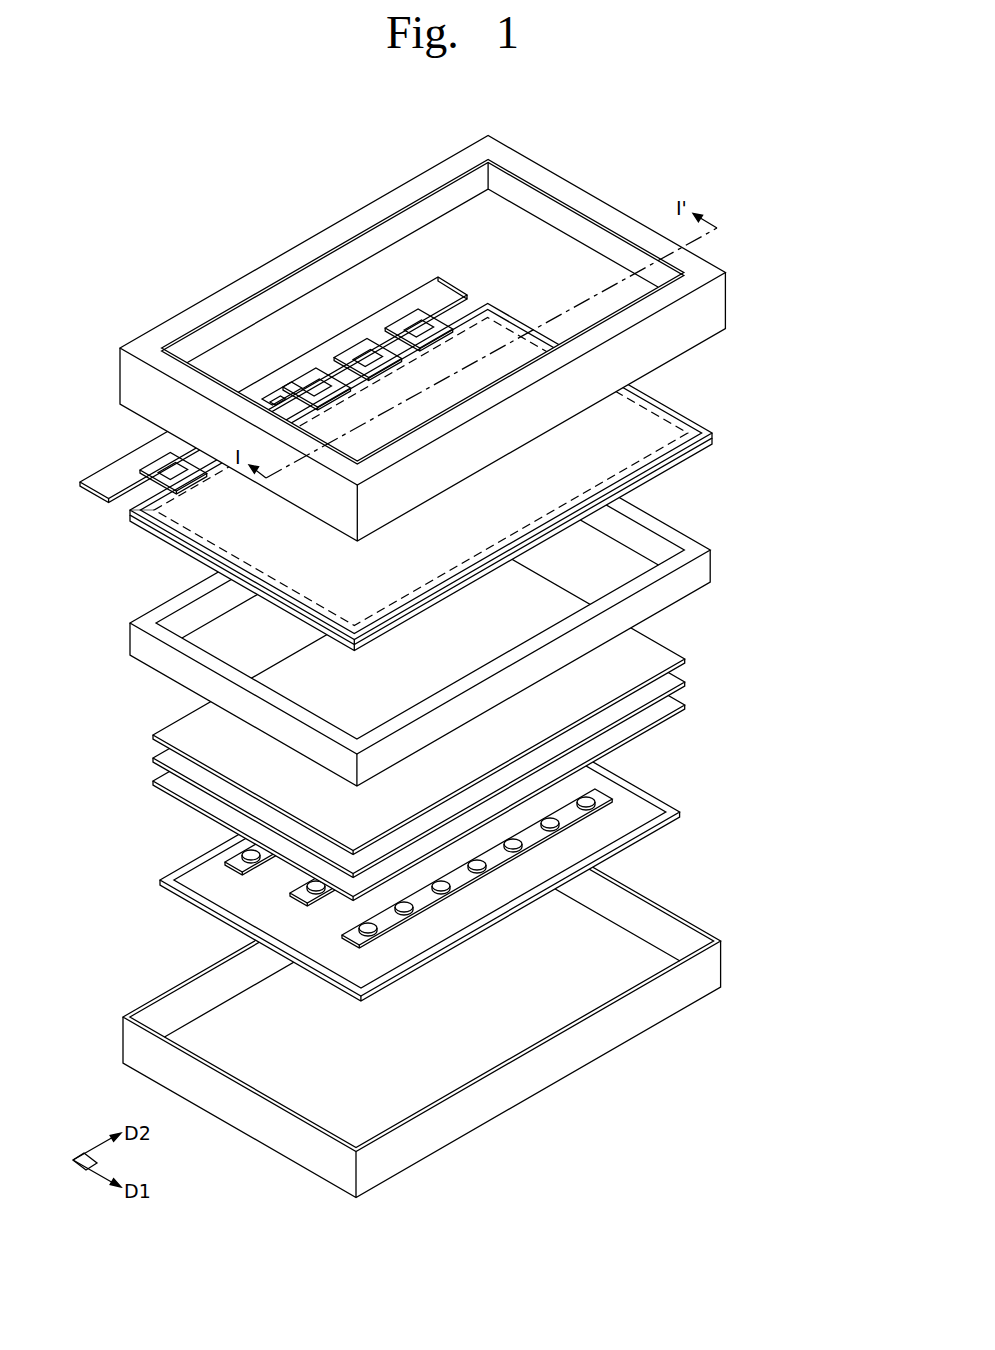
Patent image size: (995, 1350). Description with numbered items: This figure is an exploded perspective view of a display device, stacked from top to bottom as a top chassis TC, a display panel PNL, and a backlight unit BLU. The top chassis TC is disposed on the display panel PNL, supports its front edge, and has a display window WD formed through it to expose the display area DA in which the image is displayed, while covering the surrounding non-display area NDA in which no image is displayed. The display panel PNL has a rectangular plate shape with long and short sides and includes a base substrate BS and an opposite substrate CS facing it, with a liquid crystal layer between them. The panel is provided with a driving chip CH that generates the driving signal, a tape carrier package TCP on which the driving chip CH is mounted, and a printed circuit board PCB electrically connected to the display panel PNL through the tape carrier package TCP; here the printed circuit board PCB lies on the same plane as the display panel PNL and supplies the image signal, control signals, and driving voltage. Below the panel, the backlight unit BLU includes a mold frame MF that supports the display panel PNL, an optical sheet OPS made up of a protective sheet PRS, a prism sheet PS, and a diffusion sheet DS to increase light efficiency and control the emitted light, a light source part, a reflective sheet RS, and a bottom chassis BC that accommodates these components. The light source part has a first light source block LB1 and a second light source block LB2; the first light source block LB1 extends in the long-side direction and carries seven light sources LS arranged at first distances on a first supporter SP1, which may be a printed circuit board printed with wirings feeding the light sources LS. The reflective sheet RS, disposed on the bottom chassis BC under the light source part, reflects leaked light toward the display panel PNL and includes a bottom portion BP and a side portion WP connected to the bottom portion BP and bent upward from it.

The display window WD is at (535, 240).
The top chassis TC is at (452, 338).
The opposite substrate CS is at (712, 435).
The base substrate BS is at (712, 443).
The display panel PNL is at (438, 464).
The tape carrier package TCP is at (257, 401).
The driving chip CH is at (160, 470).
The printed circuit board PCB is at (108, 482).
The non-display area NDA is at (155, 514).
The display area DA is at (240, 528).
The mold frame MF is at (707, 547).
The protective sheet PRS is at (678, 658).
The prism sheet PS is at (678, 682).
The diffusion sheet DS is at (678, 706).
The optical sheet OPS is at (488, 722).
The backlight unit BLU is at (498, 808).
The light sources LS is at (590, 793).
The first supporter SP1 is at (612, 799).
The first light source block LB1 is at (582, 845).
The bottom portion BP is at (593, 842).
The side portion WP is at (613, 857).
The reflective sheet RS is at (485, 848).
The second light source block LB2 is at (288, 895).
The bottom chassis BC is at (454, 1002).